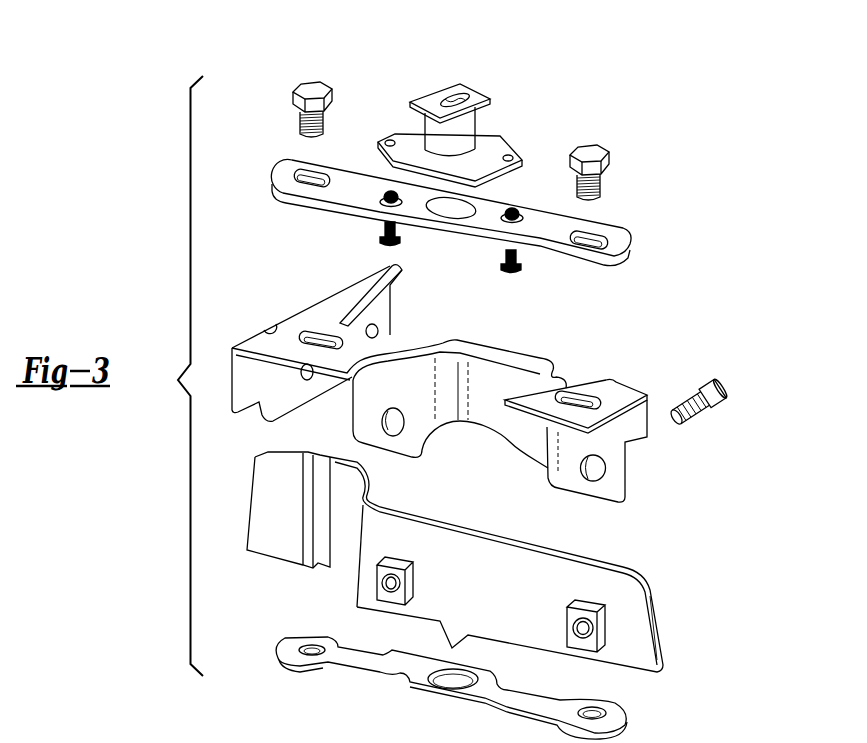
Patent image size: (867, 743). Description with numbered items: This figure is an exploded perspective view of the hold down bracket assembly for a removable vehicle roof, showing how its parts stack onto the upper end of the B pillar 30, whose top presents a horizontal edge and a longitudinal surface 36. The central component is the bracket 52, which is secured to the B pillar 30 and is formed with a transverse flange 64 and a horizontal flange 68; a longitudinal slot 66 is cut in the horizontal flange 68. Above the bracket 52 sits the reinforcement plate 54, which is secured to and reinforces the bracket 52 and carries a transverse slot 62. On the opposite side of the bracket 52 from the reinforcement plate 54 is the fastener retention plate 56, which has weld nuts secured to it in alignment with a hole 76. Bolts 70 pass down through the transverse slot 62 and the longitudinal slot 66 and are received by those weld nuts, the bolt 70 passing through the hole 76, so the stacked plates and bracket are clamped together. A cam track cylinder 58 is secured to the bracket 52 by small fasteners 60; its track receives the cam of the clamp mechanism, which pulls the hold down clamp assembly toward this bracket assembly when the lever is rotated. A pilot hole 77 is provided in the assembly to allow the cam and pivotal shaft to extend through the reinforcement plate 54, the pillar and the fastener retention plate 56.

The B pillar 30 is at (488, 562).
The longitudinal surface 36 is at (645, 652).
The bracket 52 is at (448, 363).
The reinforcement plate 54 is at (465, 203).
The fastener retention plate 56 is at (468, 659).
The cam track cylinder 58 is at (432, 131).
The fasteners 60 is at (503, 266).
The transverse slot 62 is at (301, 176).
The transverse flange 64 is at (283, 400).
The longitudinal slot 66 is at (336, 335).
The horizontal flange 68 is at (351, 302).
The bolts 70 is at (326, 87).
The hole 76 is at (306, 644).
The pilot hole 77 is at (452, 687).